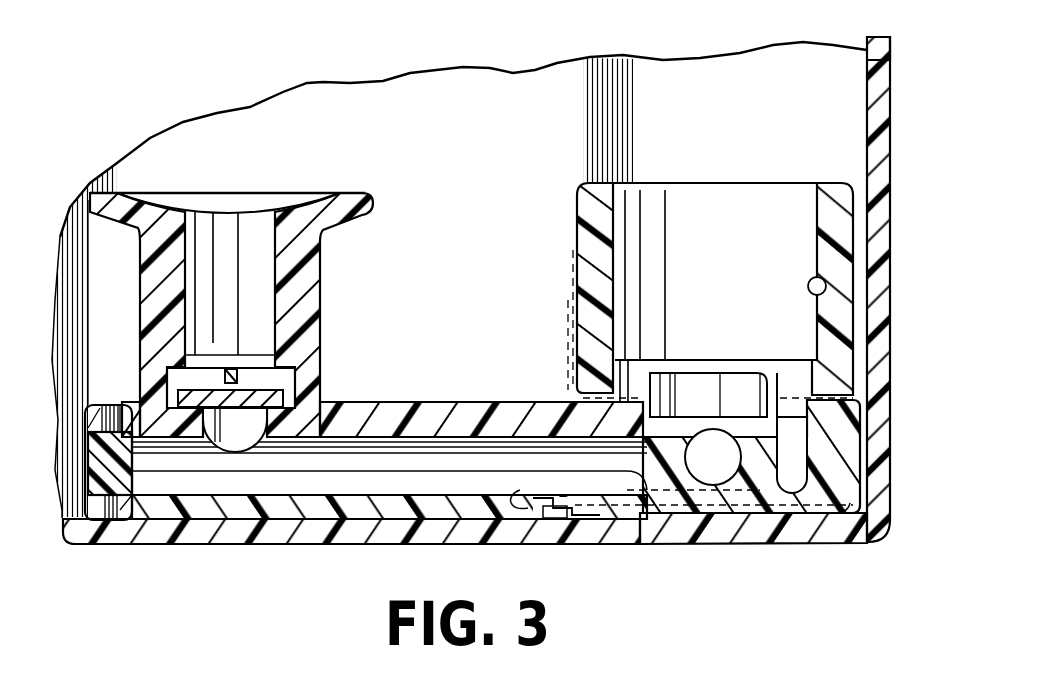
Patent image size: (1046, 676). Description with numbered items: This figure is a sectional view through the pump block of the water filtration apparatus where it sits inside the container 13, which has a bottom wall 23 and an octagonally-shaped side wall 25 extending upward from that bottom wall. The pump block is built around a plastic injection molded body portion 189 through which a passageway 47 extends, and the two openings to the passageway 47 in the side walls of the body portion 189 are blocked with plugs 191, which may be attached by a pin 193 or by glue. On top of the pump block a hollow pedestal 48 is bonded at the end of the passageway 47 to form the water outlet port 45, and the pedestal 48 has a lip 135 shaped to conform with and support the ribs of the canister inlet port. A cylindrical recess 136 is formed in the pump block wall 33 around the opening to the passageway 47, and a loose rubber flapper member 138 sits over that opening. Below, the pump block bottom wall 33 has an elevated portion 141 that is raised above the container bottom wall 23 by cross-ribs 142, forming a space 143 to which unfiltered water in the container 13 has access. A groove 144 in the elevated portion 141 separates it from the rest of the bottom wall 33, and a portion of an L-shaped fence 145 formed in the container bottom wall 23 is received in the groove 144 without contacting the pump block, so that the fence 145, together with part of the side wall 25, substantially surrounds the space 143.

The container 13 is at (872, 117).
The side wall 25 is at (873, 88).
The bottom wall 23 is at (273, 546).
The water outlet port 45 is at (213, 237).
The lip 135 is at (350, 207).
The hollow pedestal 48 is at (148, 308).
The cylindrical recess 136 is at (160, 373).
The flapper member 138 is at (253, 393).
The pin 193 is at (109, 405).
The plug 191 is at (120, 505).
The passageway 47 is at (375, 467).
The body portion 189 is at (420, 413).
The bottom wall 33 is at (508, 510).
The groove 144 is at (525, 490).
The fence 145 is at (565, 515).
The space 143 is at (603, 515).
The elevated portion 141 is at (648, 520).
The cross-ribs 142 is at (725, 520).